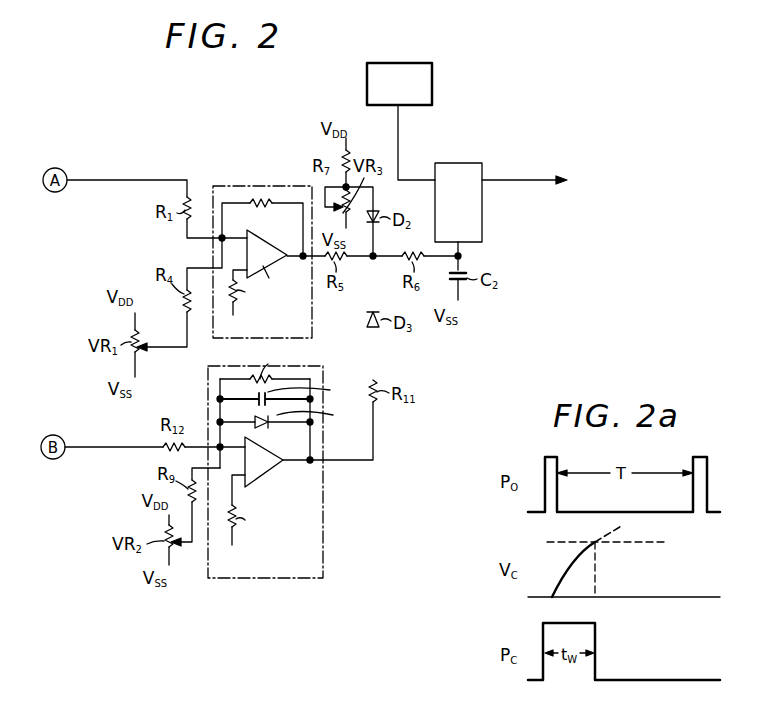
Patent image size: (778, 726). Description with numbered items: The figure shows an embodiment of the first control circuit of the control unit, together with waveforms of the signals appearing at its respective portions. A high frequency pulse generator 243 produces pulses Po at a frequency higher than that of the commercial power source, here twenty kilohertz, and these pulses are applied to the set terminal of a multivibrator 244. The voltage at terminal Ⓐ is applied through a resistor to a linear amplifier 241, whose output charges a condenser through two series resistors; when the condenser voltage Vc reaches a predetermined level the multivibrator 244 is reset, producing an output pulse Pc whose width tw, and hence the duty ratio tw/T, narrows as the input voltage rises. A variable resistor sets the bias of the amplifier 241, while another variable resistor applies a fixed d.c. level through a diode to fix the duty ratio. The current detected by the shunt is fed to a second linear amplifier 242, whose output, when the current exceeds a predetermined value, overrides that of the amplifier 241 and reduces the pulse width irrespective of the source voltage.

The linear amplifier 241 is at (234, 186).
The linear amplifier 242 is at (323, 553).
The high frequency pulse generator 243 is at (433, 83).
The multivibrator 244 is at (465, 163).